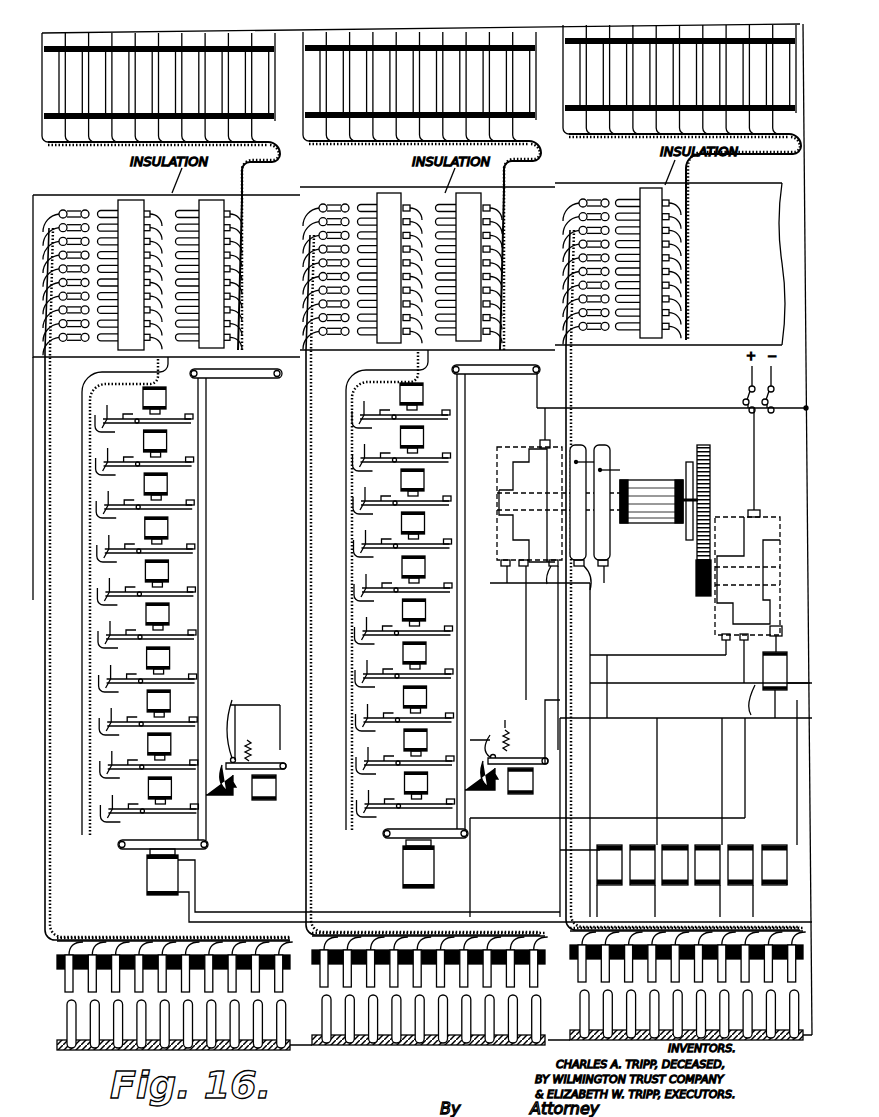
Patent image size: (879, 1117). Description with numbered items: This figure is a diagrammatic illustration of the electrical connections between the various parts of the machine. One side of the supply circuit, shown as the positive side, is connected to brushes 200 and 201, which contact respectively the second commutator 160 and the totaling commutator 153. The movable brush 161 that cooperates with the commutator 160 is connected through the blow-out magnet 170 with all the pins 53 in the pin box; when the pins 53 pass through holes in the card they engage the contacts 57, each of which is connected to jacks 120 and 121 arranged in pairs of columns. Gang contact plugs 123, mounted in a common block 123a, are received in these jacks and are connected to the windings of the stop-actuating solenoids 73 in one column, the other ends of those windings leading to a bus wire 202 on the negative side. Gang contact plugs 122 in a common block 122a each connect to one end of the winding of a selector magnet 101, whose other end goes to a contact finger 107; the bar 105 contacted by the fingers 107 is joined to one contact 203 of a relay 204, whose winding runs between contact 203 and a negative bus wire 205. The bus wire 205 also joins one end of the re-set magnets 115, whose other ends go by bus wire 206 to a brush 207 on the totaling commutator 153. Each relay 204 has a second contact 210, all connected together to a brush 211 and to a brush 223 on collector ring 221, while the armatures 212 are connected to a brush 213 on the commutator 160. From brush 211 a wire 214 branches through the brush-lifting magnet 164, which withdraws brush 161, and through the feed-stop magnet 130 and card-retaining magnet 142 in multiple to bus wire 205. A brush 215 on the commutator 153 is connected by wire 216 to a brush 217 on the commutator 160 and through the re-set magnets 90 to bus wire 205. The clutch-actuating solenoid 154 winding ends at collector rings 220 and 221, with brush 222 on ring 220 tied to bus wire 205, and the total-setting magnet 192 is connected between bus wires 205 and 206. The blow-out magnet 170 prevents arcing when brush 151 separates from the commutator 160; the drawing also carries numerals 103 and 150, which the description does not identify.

The stop-actuating solenoids 73 is at (208, 42).
The bus wire 202 is at (548, 28).
The jack 120 is at (393, 250).
The jack 121 is at (393, 250).
The gang contact plugs 122 is at (393, 250).
The common block 122a is at (150, 225).
The gang contact plugs 123 is at (393, 254).
The common block 123a is at (223, 232).
The selector magnets 101 is at (297, 592).
The relay armature 103 is at (190, 462).
The bar 105 is at (205, 435).
The contact fingers 107 is at (105, 560).
The re-set magnets 115 is at (150, 876).
The bus wire 205 is at (189, 917).
The bus wire 206 is at (198, 913).
The second contact 210 is at (230, 721).
The armatures 212 is at (254, 744).
The relay 204 is at (267, 772).
The contact 203 is at (223, 787).
The brush 201 is at (548, 440).
The totaling commutator 153 is at (524, 468).
The collector ring 221 is at (578, 536).
The collector ring 220 is at (604, 552).
The brush 222 is at (612, 564).
The brush 223 is at (587, 585).
The brush 215 is at (545, 588).
The brush 211 is at (521, 561).
The brush 207 is at (506, 565).
The clutch-actuating solenoid 154 is at (660, 490).
The brush 151 is at (706, 448).
The pinion 150 is at (698, 588).
The second commutator 160 is at (749, 528).
The brush 200 is at (760, 510).
The brush 217 is at (722, 640).
The brush 213 is at (732, 646).
The wire 216 is at (616, 668).
The wire 214 is at (524, 682).
The movable brush 161 is at (776, 646).
The brush-lifting magnet 164 is at (777, 685).
The total-setting magnet 192 is at (597, 873).
The re-set magnets 90 is at (640, 882).
The feed-stop magnet 130 is at (707, 883).
The card-retaining magnet 142 is at (744, 883).
The blow-out magnet 170 is at (773, 882).
The contacts 57 is at (434, 989).
The pins 53 is at (323, 1018).